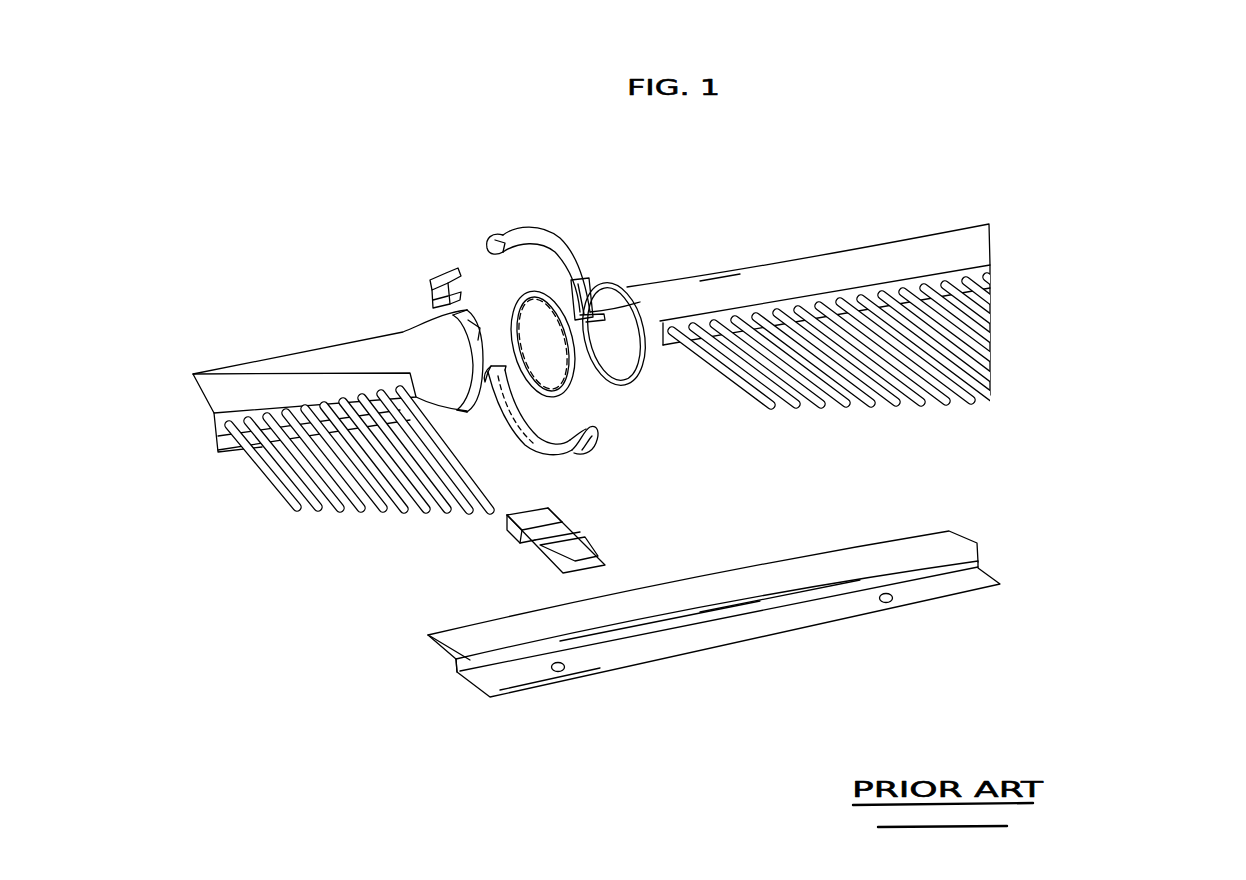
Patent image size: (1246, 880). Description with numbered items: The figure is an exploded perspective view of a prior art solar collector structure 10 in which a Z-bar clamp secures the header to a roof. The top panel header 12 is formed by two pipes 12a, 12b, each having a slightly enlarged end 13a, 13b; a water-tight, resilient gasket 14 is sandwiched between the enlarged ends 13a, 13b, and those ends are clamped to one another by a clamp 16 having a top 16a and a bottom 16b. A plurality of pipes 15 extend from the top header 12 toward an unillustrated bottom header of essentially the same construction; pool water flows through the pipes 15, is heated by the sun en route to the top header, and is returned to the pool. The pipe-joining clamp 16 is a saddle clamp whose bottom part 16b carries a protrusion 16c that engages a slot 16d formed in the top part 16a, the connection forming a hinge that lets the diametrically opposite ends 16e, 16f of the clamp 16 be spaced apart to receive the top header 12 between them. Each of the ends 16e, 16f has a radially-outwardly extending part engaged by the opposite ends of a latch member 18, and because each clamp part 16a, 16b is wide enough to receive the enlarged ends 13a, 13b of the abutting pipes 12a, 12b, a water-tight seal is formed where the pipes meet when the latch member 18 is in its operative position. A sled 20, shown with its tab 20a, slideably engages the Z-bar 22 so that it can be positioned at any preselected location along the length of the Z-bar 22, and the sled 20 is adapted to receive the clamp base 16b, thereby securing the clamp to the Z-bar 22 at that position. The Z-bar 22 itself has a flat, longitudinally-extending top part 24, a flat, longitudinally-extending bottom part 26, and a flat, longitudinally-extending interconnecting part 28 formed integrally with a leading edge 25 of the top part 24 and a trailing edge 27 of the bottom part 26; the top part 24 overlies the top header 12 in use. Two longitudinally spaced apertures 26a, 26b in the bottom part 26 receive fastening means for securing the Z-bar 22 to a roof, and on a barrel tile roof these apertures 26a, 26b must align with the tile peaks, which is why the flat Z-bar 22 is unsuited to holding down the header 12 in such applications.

The prior art structure 10 is at (1103, 217).
The top panel header 12 is at (821, 249).
The pipe 12a is at (327, 350).
The pipe 12b is at (715, 272).
The enlarged end 13a is at (474, 335).
The enlarged end 13b is at (592, 279).
The resilient gasket 14 is at (578, 390).
The pipes 15 is at (267, 469).
The clamp 16 is at (530, 199).
The top part of clamp 16a is at (537, 227).
The bottom part of clamp 16b is at (565, 452).
The protrusion 16c is at (600, 435).
The slot 16d is at (640, 302).
The clamp end 16e is at (492, 243).
The clamp end 16f is at (500, 368).
The latch member 18 is at (426, 263).
The sled 20 is at (537, 553).
The clip tab 20a is at (593, 552).
The Z-bar 22 is at (1001, 547).
The top part 24 is at (456, 636).
The leading edge 25 is at (778, 587).
The bottom part 26 is at (520, 683).
The aperture 26a is at (561, 672).
The aperture 26b is at (890, 603).
The trailing edge 27 is at (652, 637).
The interconnecting part 28 is at (478, 663).